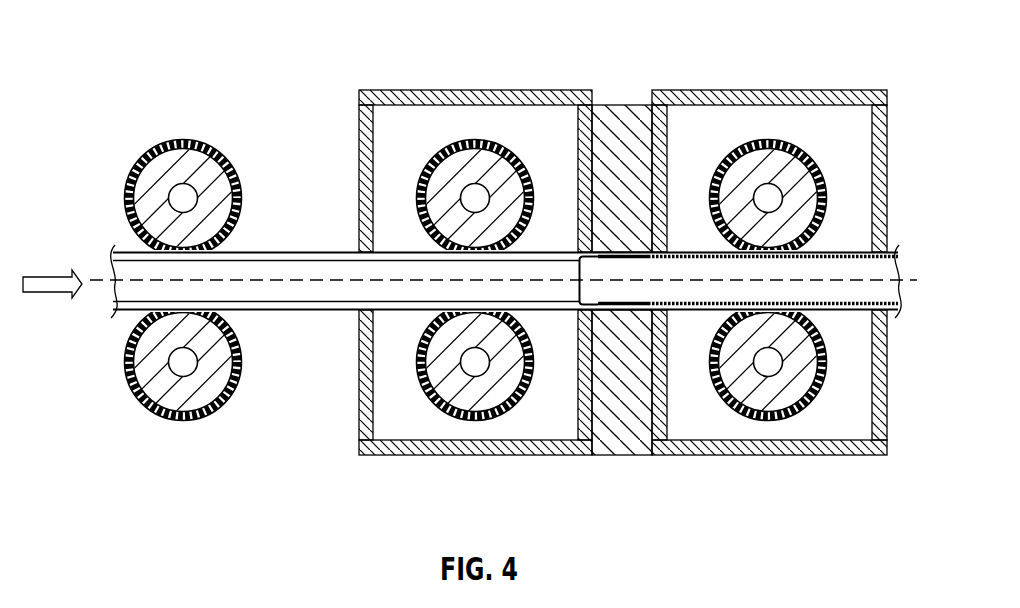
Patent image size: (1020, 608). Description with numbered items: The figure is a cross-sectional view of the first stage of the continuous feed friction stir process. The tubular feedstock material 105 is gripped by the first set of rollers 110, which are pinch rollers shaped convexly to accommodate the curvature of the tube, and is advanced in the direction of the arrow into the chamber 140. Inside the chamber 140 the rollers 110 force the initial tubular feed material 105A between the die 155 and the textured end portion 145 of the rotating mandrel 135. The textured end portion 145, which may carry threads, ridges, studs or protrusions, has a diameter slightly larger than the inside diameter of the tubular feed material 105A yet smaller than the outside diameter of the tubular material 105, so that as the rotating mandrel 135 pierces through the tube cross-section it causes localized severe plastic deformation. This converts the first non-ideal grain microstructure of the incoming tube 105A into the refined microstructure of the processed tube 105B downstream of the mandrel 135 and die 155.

The tubular feedstock material 105 is at (110, 249).
The initial tubular feed material 105A is at (309, 312).
The coated tube section 105B is at (650, 306).
The first set of rollers 110 is at (162, 150).
The rotating mandrel 135 is at (578, 268).
The chamber 140 is at (417, 90).
The textured end portion 145 is at (618, 308).
The die 155 is at (627, 115).